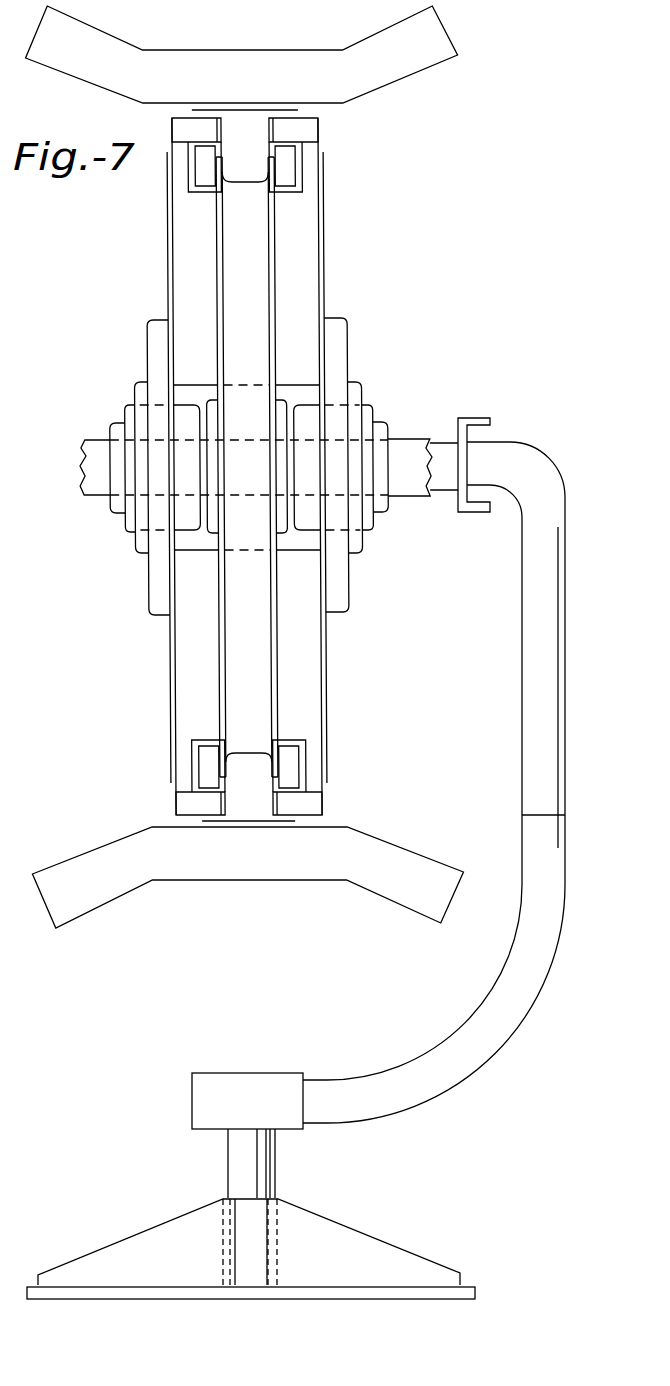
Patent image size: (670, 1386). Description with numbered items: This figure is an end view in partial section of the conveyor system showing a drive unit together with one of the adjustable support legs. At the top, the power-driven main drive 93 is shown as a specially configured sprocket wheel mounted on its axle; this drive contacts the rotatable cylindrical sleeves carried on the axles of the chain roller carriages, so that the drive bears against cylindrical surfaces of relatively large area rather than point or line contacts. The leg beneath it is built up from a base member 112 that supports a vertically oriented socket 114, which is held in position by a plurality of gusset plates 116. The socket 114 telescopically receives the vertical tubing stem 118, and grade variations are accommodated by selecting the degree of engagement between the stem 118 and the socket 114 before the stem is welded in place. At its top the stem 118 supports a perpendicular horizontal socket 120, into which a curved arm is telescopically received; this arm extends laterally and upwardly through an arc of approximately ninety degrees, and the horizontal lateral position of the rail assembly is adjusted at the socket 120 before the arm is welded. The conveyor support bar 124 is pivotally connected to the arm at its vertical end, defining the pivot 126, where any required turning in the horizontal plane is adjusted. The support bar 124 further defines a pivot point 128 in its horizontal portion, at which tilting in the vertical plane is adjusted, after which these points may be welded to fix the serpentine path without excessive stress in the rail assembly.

The main drive 93 is at (273, 260).
The conveyor support bar 124 is at (91, 440).
The pivot point 128 is at (467, 442).
The pivot 126 is at (532, 814).
The horizontal socket 120 is at (213, 1082).
The vertical tubing stem 118 is at (242, 1155).
The socket 114 is at (278, 1202).
The gusset plates 116 is at (378, 1252).
The base member 112 is at (475, 1288).